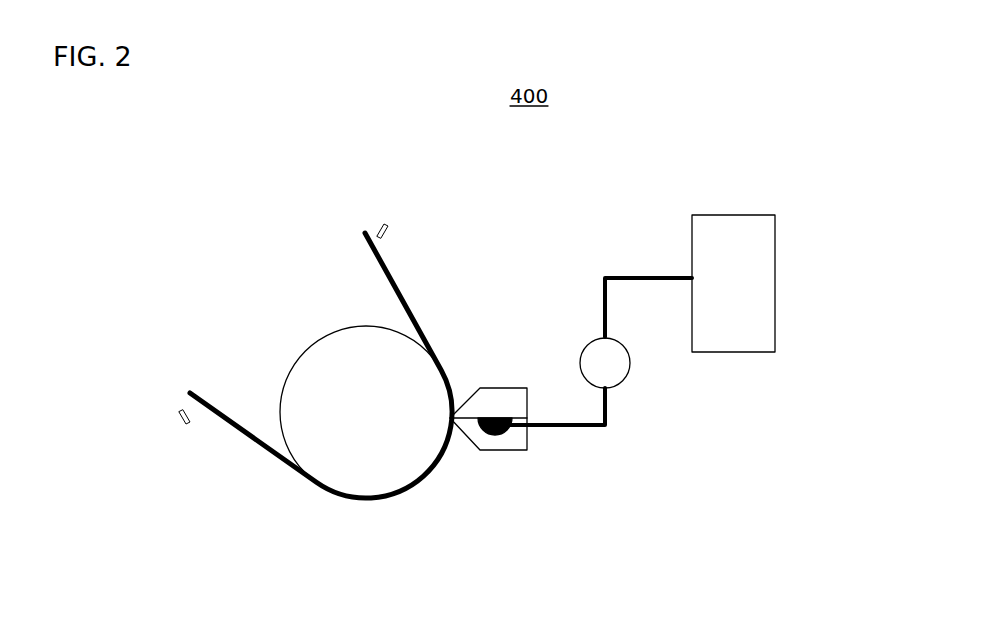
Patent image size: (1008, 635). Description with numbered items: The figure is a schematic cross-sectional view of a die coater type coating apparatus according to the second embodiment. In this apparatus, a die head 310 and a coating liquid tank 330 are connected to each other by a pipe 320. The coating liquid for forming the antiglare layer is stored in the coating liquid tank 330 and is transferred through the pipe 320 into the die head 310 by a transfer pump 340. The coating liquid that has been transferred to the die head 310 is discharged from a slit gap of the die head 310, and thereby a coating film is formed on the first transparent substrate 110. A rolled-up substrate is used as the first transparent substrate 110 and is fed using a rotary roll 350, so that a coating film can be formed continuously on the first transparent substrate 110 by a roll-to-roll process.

The first transparent substrate 110 is at (255, 440).
The rotary roll 350 is at (363, 460).
The die head 310 is at (512, 442).
The pipe 320 is at (610, 418).
The transfer pump 340 is at (582, 356).
The coating liquid tank 330 is at (727, 318).